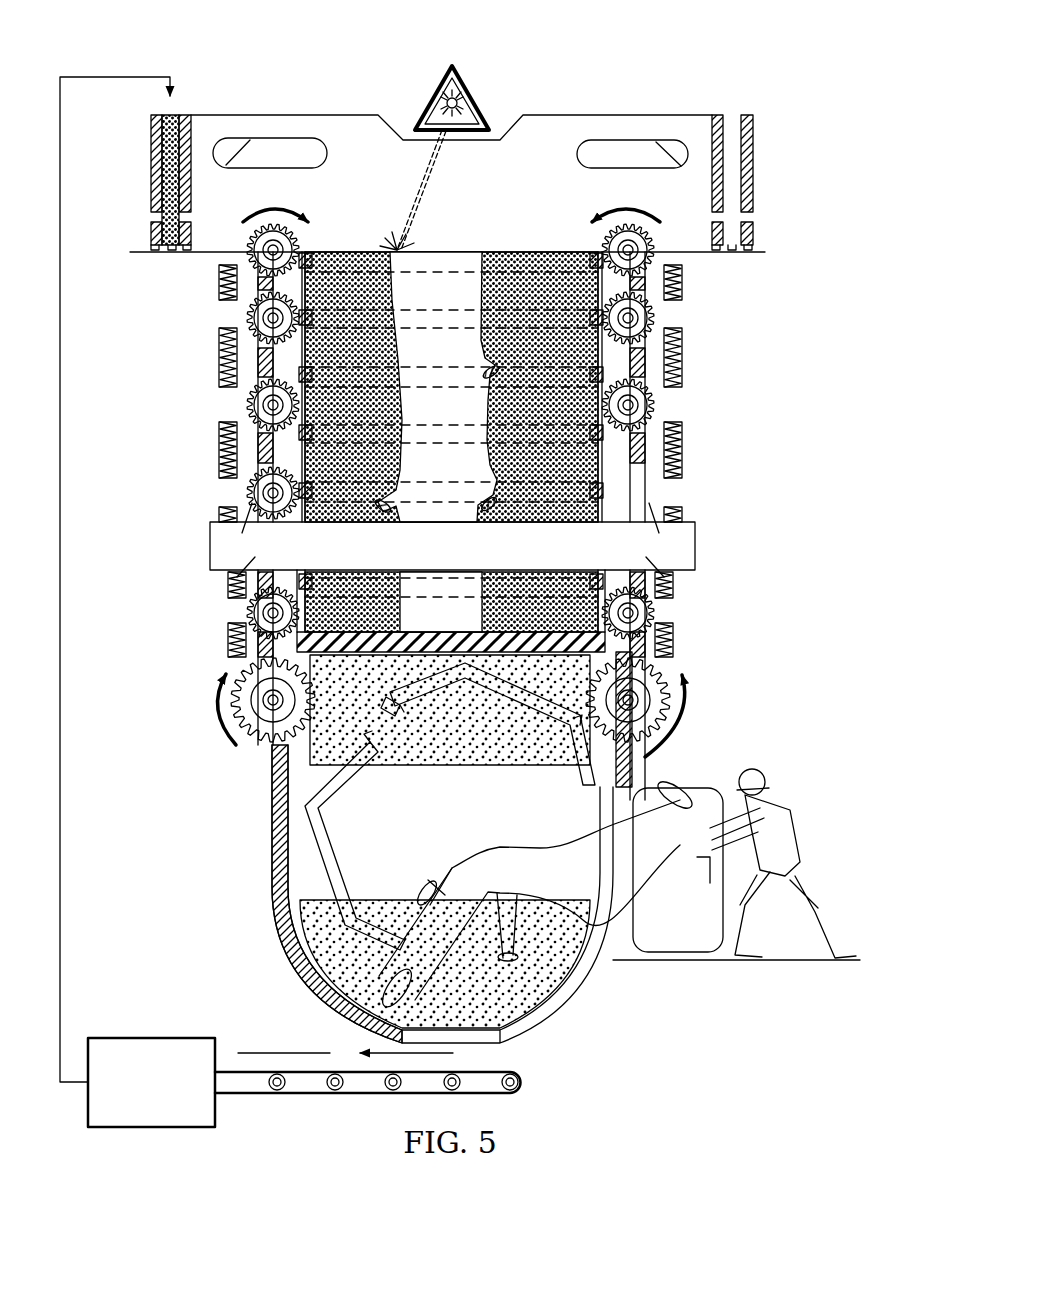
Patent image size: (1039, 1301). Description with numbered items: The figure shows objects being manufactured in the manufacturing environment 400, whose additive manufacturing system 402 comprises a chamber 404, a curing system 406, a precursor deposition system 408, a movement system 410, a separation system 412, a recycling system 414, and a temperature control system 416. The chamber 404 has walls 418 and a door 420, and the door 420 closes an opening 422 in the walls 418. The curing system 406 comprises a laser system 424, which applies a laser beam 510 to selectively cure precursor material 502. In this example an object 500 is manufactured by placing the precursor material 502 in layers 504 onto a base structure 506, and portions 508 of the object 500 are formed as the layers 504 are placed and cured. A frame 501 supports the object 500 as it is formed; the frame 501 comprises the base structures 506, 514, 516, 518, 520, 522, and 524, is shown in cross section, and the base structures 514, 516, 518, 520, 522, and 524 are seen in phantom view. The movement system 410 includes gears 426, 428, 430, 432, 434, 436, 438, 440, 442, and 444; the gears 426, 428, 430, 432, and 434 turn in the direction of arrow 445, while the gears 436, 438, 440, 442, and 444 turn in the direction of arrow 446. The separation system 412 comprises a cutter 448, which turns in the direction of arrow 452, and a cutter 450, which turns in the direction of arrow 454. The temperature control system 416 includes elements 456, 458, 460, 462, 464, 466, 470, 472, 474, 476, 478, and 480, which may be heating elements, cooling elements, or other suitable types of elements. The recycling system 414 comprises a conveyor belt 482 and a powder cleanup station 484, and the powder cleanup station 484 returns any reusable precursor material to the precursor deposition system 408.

The manufacturing environment 400 is at (302, 55).
The additive manufacturing system 402 is at (580, 95).
The chamber 404 is at (270, 782).
The curing system 406 is at (663, 116).
The precursor deposition system 408 is at (236, 152).
The movement system 410 is at (662, 495).
The separation system 412 is at (707, 697).
The recycling system 414 is at (305, 1095).
The temperature control system 416 is at (697, 432).
The walls 418 is at (266, 892).
The door 420 is at (605, 918).
The opening 422 is at (634, 772).
The laser system 424 is at (424, 94).
The gear 426 is at (300, 244).
The gear 428 is at (250, 320).
The gear 430 is at (250, 406).
The gear 432 is at (250, 493).
The gear 434 is at (250, 613).
The gear 436 is at (602, 246).
The gear 438 is at (655, 320).
The gear 440 is at (655, 406).
The gear 442 is at (618, 522).
The gear 444 is at (652, 613).
The arrow 445 is at (254, 199).
The arrow 446 is at (645, 199).
The cutter 448 is at (395, 708).
The cutter 450 is at (590, 686).
The arrow 452 is at (230, 712).
The arrow 454 is at (680, 712).
The element 456 is at (218, 282).
The element 458 is at (218, 356).
The element 460 is at (218, 446).
The element 462 is at (218, 514).
The element 464 is at (228, 585).
The element 466 is at (228, 645).
The element 470 is at (684, 282).
The element 472 is at (684, 356).
The element 474 is at (684, 455).
The element 476 is at (684, 514).
The element 478 is at (674, 585).
The element 480 is at (674, 645).
The conveyor belt 482 is at (522, 1084).
The powder cleanup station 484 is at (132, 1038).
The object 500 is at (455, 251).
The frame 501 is at (588, 348).
The precursor material 502 is at (520, 301).
The layers 504 is at (525, 416).
The base structure 506 is at (366, 655).
The portions 508 is at (420, 358).
The laser beam 510 is at (418, 178).
The base structure 514 is at (372, 585).
The base structure 516 is at (358, 502).
The base structure 518 is at (390, 440).
The base structure 520 is at (390, 382).
The base structure 522 is at (368, 322).
The base structure 524 is at (373, 272).